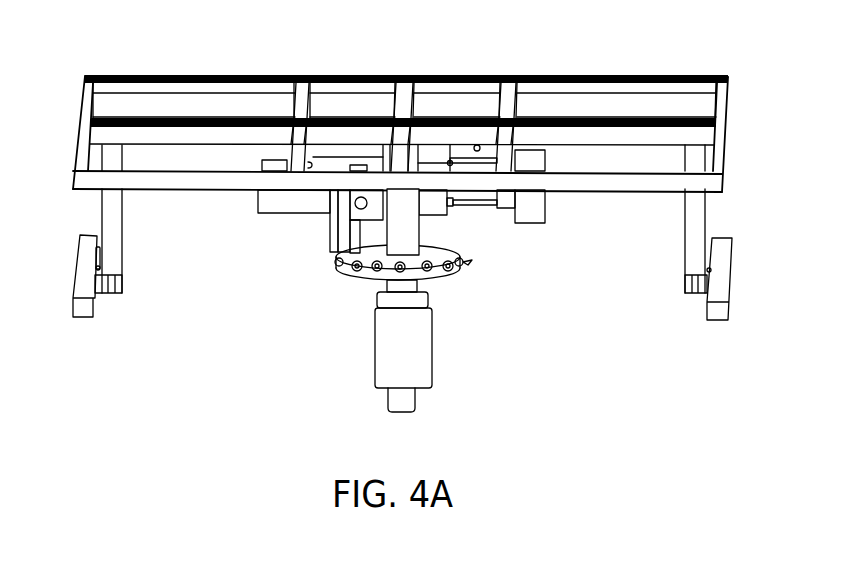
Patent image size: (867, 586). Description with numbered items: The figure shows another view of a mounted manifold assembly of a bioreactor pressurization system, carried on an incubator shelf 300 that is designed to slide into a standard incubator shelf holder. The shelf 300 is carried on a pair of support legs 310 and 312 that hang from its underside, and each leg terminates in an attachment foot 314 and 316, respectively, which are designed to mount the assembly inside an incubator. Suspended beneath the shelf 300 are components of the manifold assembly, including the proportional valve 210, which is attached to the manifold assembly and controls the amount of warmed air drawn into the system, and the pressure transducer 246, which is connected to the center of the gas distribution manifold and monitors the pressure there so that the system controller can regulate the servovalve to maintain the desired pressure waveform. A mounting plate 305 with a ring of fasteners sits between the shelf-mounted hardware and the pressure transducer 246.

The incubator shelf 300 is at (402, 211).
The proportional valve 210 is at (292, 214).
The pressure transducer 246 is at (375, 343).
The rotary mount plate 305 is at (468, 260).
The support leg 310 is at (122, 236).
The support leg 312 is at (684, 240).
The attachment foot 314 is at (82, 318).
The attachment foot 316 is at (716, 321).